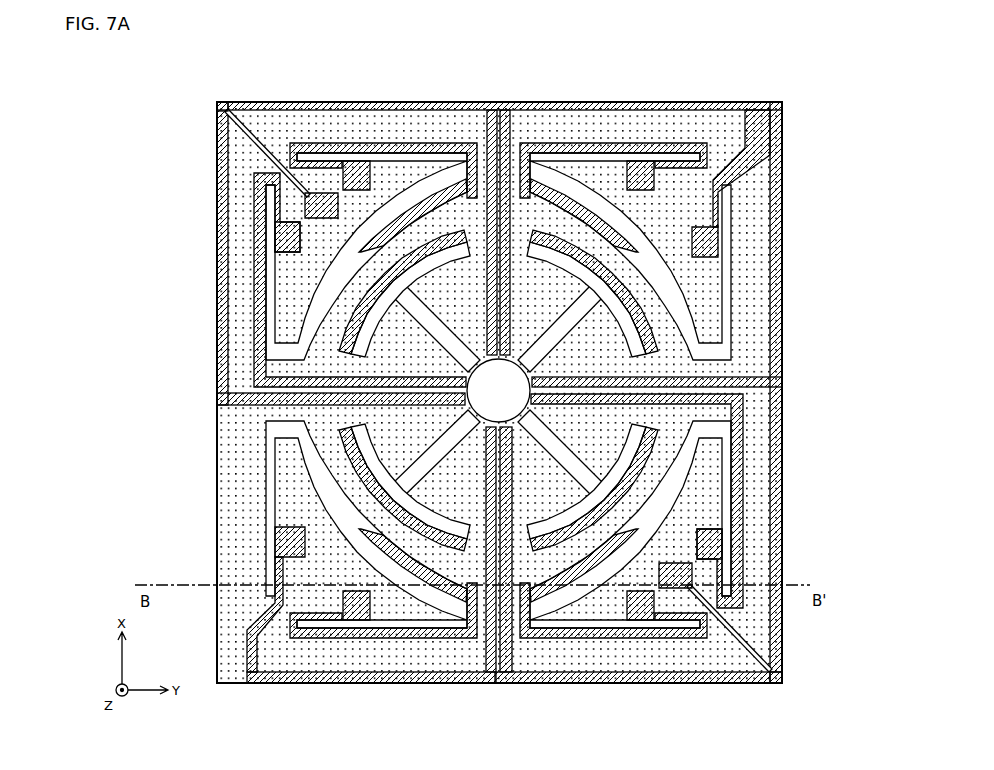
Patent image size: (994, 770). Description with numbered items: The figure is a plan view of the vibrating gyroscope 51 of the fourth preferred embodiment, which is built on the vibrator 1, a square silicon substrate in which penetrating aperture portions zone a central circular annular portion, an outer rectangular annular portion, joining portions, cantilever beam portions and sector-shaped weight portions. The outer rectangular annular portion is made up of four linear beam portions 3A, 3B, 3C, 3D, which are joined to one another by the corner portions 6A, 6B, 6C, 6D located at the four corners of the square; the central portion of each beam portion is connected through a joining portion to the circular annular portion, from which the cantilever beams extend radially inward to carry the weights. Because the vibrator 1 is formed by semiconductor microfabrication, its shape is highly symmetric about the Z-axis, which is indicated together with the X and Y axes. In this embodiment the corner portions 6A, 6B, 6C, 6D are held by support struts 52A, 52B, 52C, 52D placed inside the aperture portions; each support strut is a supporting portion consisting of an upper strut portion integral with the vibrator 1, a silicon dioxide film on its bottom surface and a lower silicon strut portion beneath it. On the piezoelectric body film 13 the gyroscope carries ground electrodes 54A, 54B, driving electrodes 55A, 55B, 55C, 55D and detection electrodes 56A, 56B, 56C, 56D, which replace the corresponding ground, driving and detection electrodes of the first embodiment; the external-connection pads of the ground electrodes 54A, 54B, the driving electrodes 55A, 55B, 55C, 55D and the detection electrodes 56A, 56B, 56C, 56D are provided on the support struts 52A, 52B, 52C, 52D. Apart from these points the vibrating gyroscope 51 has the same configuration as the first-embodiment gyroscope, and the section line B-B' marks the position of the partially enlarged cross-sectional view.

The vibrator 1 is at (778, 236).
The piezoelectric body film 13 is at (778, 347).
The vibrating gyroscope 51 is at (815, 92).
The beam portion 3A is at (622, 103).
The beam portion 3B is at (778, 280).
The beam portion 3C is at (470, 663).
The beam portion 3D is at (228, 432).
The support strut 52A is at (702, 208).
The support strut 52B is at (706, 504).
The support strut 52C is at (290, 495).
The support strut 52D is at (290, 273).
The driving electrode 55A is at (703, 143).
The driving electrode 55B is at (694, 640).
The driving electrode 55C is at (300, 640).
The driving electrode 55D is at (294, 143).
The detection electrode 56A is at (748, 138).
The detection electrode 56B is at (744, 588).
The detection electrode 56C is at (240, 663).
The detection electrode 56D is at (262, 208).
The ground electrode 54A is at (771, 657).
The ground electrode 54B is at (219, 113).
The corner portion 6A is at (783, 101).
The corner portion 6B is at (776, 684).
The corner portion 6C is at (222, 672).
The corner portion 6D is at (217, 101).